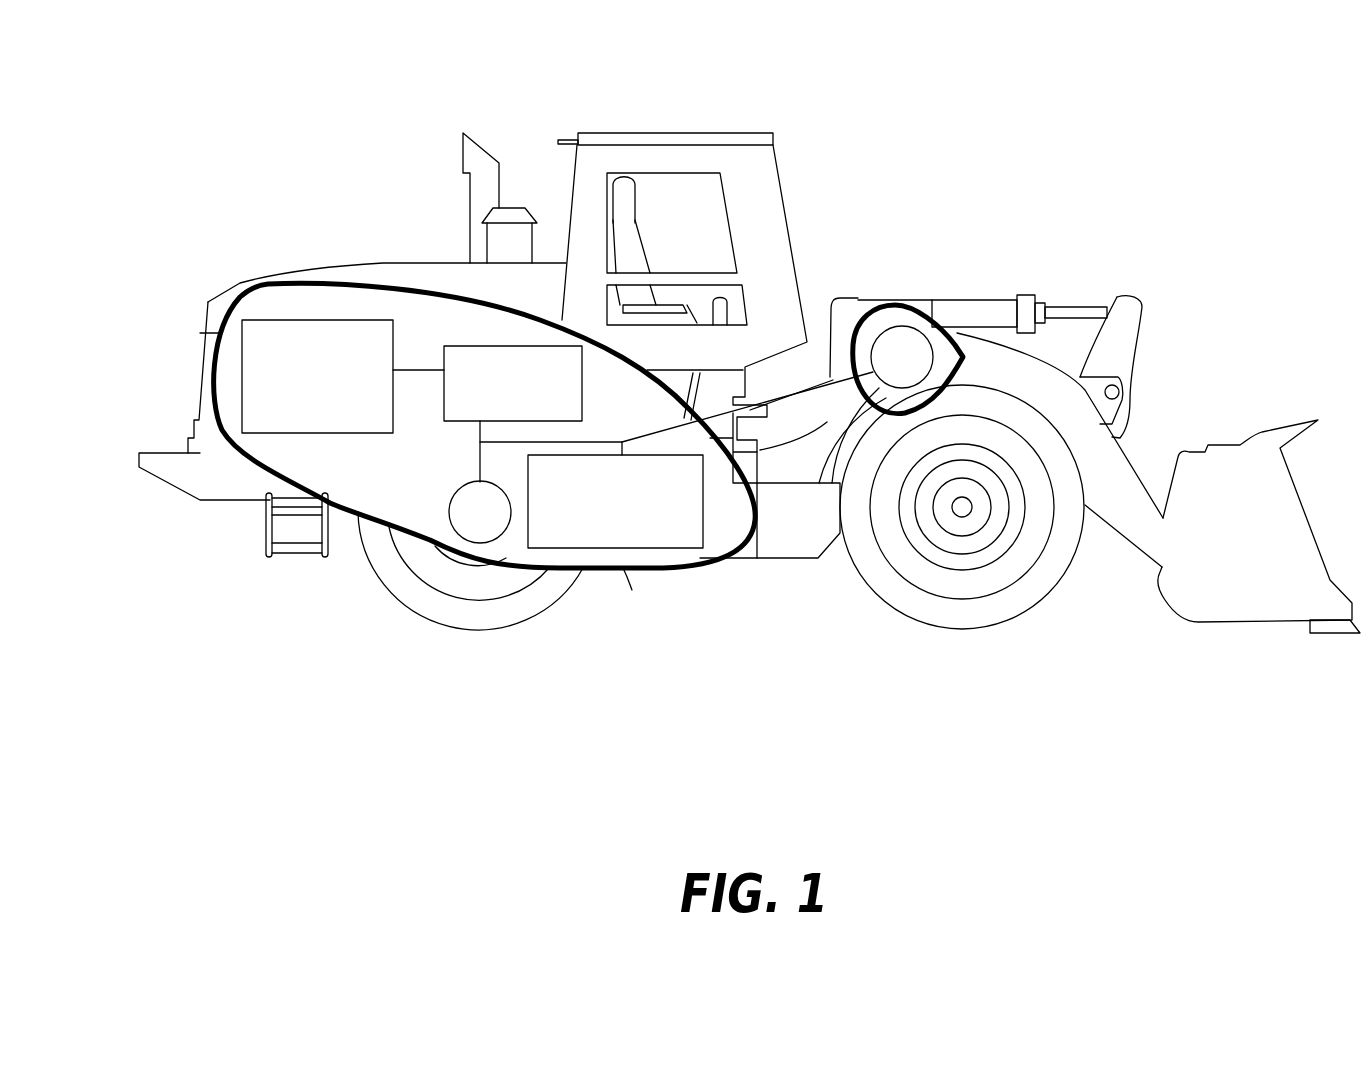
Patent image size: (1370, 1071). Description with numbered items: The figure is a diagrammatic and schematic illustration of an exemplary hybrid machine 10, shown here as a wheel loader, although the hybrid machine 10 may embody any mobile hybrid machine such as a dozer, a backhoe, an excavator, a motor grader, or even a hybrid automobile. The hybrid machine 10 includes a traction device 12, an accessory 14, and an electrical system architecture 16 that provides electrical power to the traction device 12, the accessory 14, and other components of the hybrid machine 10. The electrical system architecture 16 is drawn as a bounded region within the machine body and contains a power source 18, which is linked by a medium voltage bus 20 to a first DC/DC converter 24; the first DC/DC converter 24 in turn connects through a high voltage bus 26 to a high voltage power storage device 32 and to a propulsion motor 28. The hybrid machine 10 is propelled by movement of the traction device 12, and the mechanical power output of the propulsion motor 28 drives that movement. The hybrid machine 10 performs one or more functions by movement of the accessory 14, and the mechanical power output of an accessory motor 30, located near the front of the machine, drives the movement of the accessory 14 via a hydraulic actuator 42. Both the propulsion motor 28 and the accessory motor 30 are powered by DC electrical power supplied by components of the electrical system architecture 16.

The hybrid machine 10 is at (1027, 124).
The traction device 12 is at (443, 608).
The accessory 14 is at (1233, 543).
The electrical system architecture 16 is at (630, 568).
The power source 18 is at (308, 406).
The medium voltage bus 20 is at (407, 372).
The first DC/DC converter 24 is at (504, 413).
The high voltage bus 26 is at (595, 437).
The propulsion motor 28 is at (471, 521).
The accessory motor 30 is at (893, 366).
The high voltage power storage device 32 is at (606, 544).
The hydraulic actuator 42 is at (972, 313).